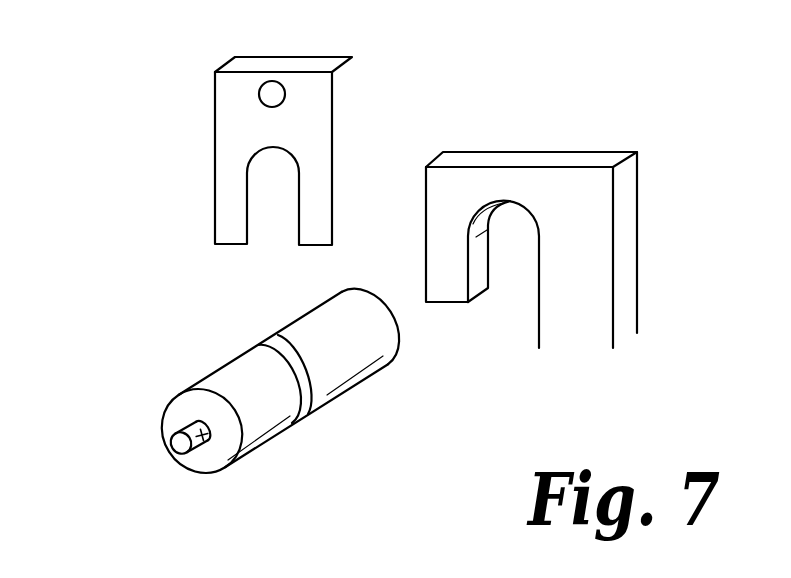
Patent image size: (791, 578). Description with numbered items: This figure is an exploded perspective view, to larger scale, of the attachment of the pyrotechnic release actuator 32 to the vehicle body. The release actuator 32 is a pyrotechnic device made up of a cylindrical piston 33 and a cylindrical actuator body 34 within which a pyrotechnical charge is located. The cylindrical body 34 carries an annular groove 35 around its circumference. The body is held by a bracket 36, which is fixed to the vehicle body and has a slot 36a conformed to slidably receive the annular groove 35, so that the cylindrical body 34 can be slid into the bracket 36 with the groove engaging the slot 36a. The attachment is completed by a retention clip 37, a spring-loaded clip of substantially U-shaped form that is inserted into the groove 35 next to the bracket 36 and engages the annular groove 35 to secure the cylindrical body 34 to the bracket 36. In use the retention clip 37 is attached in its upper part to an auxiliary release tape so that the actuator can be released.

The release actuator 32 is at (252, 412).
The cylindrical piston 33 is at (206, 437).
The cylindrical actuator body 34 is at (362, 357).
The annular groove 35 is at (312, 432).
The bracket 36 is at (572, 212).
The slot 36a is at (539, 285).
The retention clip 37 is at (313, 110).